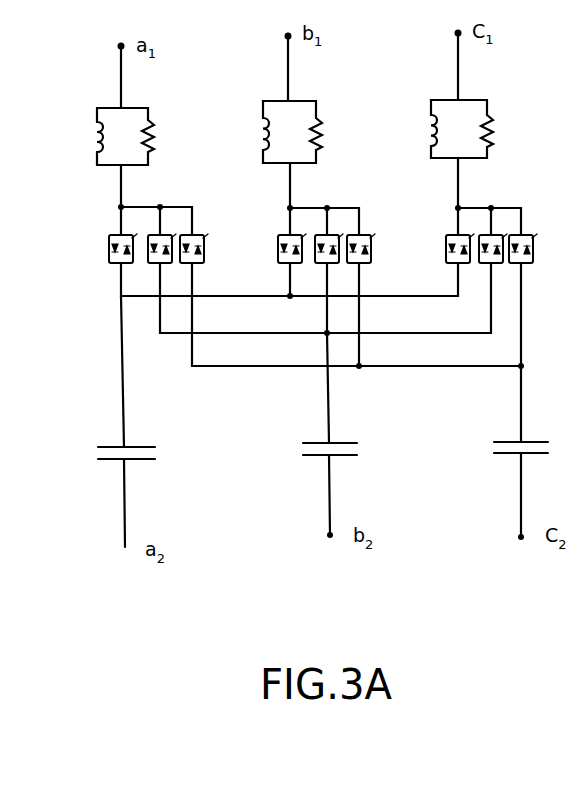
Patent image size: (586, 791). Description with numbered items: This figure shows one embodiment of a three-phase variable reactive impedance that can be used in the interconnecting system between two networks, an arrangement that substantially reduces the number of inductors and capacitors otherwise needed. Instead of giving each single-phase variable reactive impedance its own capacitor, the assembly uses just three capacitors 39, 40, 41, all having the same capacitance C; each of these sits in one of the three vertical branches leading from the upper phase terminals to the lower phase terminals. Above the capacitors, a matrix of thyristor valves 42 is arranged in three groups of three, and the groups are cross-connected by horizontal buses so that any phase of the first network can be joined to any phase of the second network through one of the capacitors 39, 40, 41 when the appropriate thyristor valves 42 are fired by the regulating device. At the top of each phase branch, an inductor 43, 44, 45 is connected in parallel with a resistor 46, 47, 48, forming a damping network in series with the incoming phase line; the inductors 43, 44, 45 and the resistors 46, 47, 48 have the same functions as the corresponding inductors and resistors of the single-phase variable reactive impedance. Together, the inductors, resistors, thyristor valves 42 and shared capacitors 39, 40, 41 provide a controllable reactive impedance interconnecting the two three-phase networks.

The capacitor 39 is at (518, 440).
The capacitor 40 is at (323, 442).
The capacitor 41 is at (111, 445).
The thyristor valves 42 is at (100, 241).
The inductor 43 is at (97, 139).
The inductor 44 is at (263, 136).
The inductor 45 is at (431, 132).
The resistor 46 is at (148, 137).
The resistor 47 is at (316, 134).
The resistor 48 is at (487, 130).